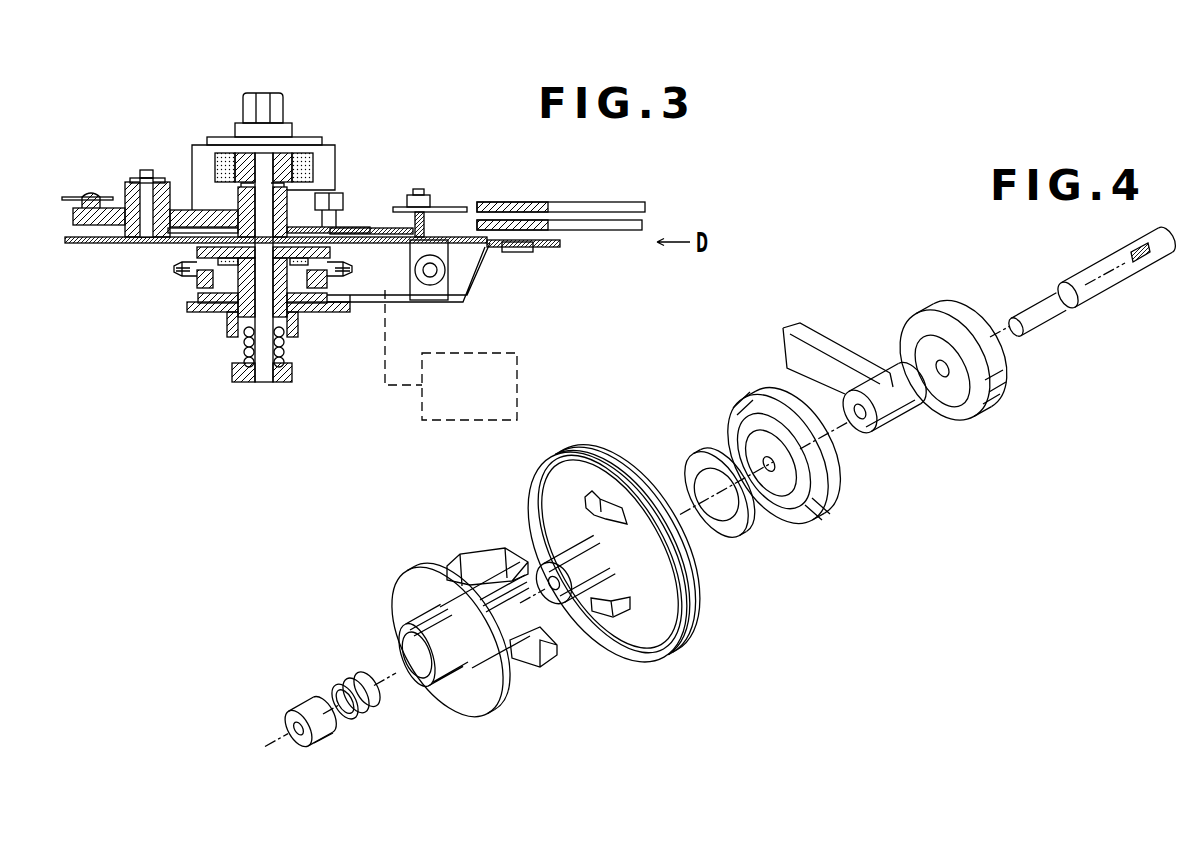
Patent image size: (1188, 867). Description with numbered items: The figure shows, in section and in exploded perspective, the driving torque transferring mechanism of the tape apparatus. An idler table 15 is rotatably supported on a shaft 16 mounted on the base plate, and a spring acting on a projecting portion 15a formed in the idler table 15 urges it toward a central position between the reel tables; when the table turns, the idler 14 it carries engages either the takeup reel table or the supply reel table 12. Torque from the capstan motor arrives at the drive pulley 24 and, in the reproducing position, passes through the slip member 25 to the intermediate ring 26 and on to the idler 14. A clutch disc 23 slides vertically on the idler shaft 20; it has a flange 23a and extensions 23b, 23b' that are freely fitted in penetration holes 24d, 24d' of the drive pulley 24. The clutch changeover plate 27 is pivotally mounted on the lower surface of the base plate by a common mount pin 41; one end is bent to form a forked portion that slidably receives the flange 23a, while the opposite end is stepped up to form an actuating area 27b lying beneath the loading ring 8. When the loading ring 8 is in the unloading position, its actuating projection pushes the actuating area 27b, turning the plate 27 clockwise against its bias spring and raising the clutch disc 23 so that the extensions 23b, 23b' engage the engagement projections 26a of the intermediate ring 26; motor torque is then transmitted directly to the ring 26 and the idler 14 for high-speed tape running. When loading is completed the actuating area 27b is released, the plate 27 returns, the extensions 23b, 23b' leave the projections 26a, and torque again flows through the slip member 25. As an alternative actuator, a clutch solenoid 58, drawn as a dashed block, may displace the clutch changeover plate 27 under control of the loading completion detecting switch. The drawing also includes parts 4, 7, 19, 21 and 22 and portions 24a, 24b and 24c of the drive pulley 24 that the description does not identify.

In FIG. 3, the felt pads 4 is at (306, 157).
In FIG. 3, the arm 7 is at (567, 207).
In FIG. 3, the loading ring 8 is at (597, 230).
In FIG. 3, the supply reel table 12 is at (323, 152).
In FIG. 4, the supply reel table 12 is at (1053, 318).
In FIG. 4, the idler 14 is at (972, 408).
In FIG. 3, the idler table 15 is at (283, 193).
In FIG. 4, the idler table 15 is at (891, 424).
In FIG. 3, the projecting portion 15a is at (88, 196).
In FIG. 3, the shaft 16 is at (142, 190).
In FIG. 3, the bearing block 19 is at (438, 247).
In FIG. 3, the idler shaft 20 is at (263, 382).
In FIG. 3, the nut 21 is at (232, 373).
In FIG. 4, the nut 21 is at (303, 700).
In FIG. 3, the spring 22 is at (284, 353).
In FIG. 4, the spring 22 is at (350, 681).
In FIG. 3, the clutch disc 23 is at (312, 318).
In FIG. 4, the clutch disc 23 is at (485, 734).
In FIG. 3, the flange 23a is at (193, 312).
In FIG. 4, the flange 23a is at (493, 709).
In FIG. 3, the extension 23b is at (214, 319).
In FIG. 4, the extension 23b is at (473, 554).
In FIG. 4, the extension 23b' is at (556, 675).
In FIG. 3, the drive pulley 24 is at (231, 322).
In FIG. 4, the drive pulley 24 is at (649, 673).
In FIG. 4, the drum face 24a is at (652, 620).
In FIG. 4, the drum hub 24b is at (580, 567).
In FIG. 3, the drum rim 24c is at (348, 264).
In FIG. 4, the drum rim 24c is at (600, 452).
In FIG. 4, the penetration hole 24d is at (627, 473).
In FIG. 4, the penetration hole 24d' is at (606, 646).
In FIG. 3, the slip member 25 is at (202, 292).
In FIG. 4, the slip member 25 is at (733, 532).
In FIG. 3, the intermediate ring 26 is at (183, 251).
In FIG. 4, the intermediate ring 26 is at (815, 535).
In FIG. 4, the engagement projection 26a is at (740, 404).
In FIG. 3, the clutch changeover plate 27 is at (427, 303).
In FIG. 3, the actuating area 27b is at (533, 244).
In FIG. 3, the mount pin 41 is at (432, 270).
In FIG. 3, the clutch solenoid 58 is at (430, 422).